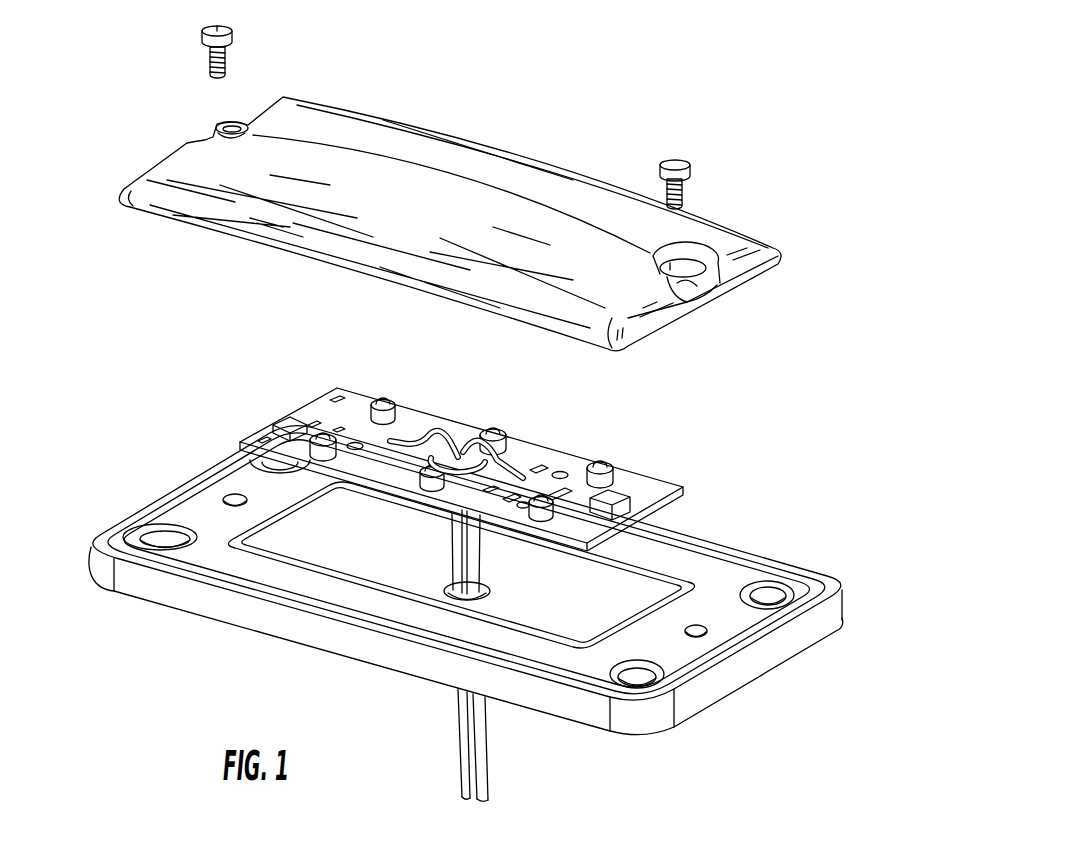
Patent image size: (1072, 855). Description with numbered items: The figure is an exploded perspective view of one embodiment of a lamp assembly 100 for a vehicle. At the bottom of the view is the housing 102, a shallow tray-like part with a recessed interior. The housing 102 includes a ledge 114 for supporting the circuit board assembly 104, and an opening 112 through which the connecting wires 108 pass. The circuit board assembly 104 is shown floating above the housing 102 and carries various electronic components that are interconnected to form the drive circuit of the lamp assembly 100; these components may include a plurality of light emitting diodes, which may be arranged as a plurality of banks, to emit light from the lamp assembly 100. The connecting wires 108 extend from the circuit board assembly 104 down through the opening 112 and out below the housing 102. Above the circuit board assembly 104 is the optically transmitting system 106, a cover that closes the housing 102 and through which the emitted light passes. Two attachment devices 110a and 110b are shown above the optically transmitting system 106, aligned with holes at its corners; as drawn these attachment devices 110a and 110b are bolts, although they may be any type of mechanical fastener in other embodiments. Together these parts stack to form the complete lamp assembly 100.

The lamp assembly 100 is at (985, 668).
The housing 102 is at (752, 620).
The circuit board assembly 104 is at (652, 490).
The optically transmitting system 106 is at (705, 228).
The connecting wires 108 is at (484, 747).
The attachment device 110a is at (223, 26).
The attachment device 110b is at (678, 160).
The opening 112 is at (493, 585).
The ledge 114 is at (307, 538).